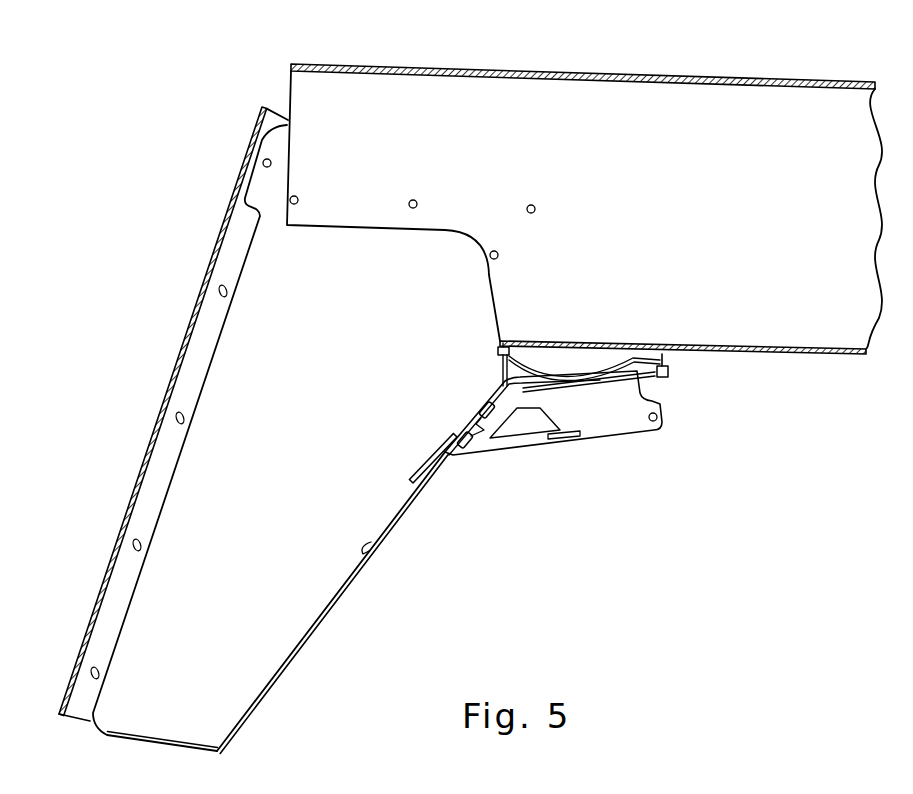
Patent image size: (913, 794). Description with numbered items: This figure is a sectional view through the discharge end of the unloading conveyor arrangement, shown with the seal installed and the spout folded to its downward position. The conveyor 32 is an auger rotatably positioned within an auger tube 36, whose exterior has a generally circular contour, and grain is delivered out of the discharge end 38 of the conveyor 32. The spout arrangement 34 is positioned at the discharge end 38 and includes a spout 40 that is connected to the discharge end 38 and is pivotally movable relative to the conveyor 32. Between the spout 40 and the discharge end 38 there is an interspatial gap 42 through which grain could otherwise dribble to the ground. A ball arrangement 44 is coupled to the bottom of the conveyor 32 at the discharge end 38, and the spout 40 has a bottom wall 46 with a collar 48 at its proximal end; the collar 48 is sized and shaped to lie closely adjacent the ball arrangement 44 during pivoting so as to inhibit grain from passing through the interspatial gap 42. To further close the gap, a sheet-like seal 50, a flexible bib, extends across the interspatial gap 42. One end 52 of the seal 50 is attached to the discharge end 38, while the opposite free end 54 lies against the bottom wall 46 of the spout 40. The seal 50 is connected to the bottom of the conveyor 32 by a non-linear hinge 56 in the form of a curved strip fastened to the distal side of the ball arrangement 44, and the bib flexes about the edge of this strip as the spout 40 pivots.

The conveyor 32 is at (810, 83).
The spout arrangement 34 is at (345, 597).
The auger tube 36 is at (798, 355).
The discharge end 38 is at (403, 64).
The spout 40 is at (247, 668).
The interspatial gap 42 is at (517, 370).
The ball arrangement 44 is at (583, 357).
The bottom wall 46 is at (372, 547).
The collar 48 is at (606, 440).
The sheet-like seal 50 is at (440, 443).
The end of seal 52 is at (500, 363).
The free end 54 is at (420, 467).
The non-linear hinge 56 is at (497, 345).